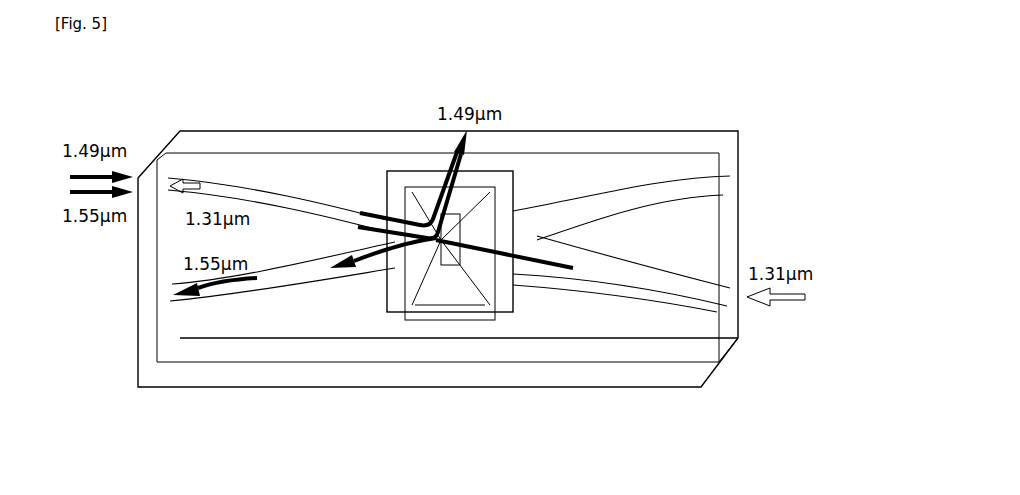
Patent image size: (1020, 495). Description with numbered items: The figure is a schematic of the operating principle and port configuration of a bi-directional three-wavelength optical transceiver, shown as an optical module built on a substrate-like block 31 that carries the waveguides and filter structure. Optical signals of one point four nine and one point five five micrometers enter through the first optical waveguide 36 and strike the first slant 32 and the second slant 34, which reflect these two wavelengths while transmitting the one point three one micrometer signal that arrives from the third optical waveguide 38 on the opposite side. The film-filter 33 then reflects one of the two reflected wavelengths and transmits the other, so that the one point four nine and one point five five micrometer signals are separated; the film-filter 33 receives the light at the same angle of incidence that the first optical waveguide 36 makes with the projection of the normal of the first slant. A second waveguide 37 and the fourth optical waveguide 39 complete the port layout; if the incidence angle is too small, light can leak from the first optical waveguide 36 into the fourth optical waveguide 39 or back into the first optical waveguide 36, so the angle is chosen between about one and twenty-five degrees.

The substrate 31 is at (388, 131).
The first slant 32 is at (405, 320).
The film-filter 33 is at (507, 168).
The second slant 34 is at (503, 318).
The first optical waveguide 36 is at (293, 190).
The second optical waveguide 37 is at (283, 323).
The third optical waveguide 38 is at (663, 300).
The fourth optical waveguide 39 is at (667, 183).